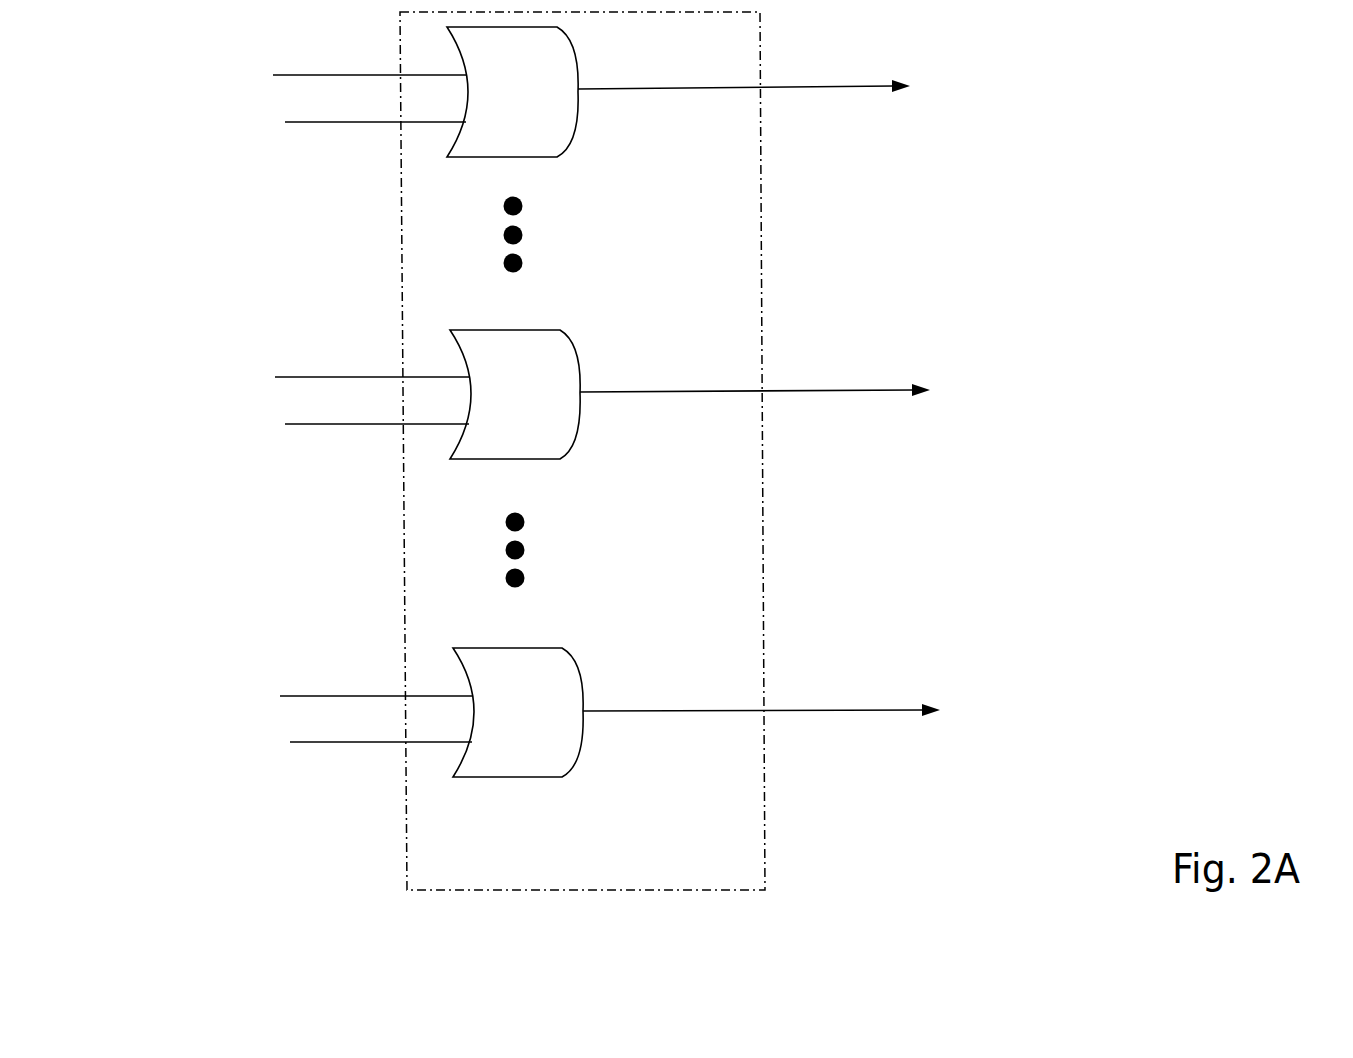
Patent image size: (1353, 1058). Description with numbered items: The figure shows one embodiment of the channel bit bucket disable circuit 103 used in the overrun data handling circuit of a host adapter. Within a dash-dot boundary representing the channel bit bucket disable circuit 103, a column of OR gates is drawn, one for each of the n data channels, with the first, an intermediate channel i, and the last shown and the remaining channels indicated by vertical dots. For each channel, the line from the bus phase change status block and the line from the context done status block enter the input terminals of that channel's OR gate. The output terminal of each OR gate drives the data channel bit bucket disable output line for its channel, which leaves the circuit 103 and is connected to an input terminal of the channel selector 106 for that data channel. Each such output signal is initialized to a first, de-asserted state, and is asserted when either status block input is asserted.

The channel bit bucket disable circuit 103 is at (582, 451).
The channel selector 106 is at (759, 403).